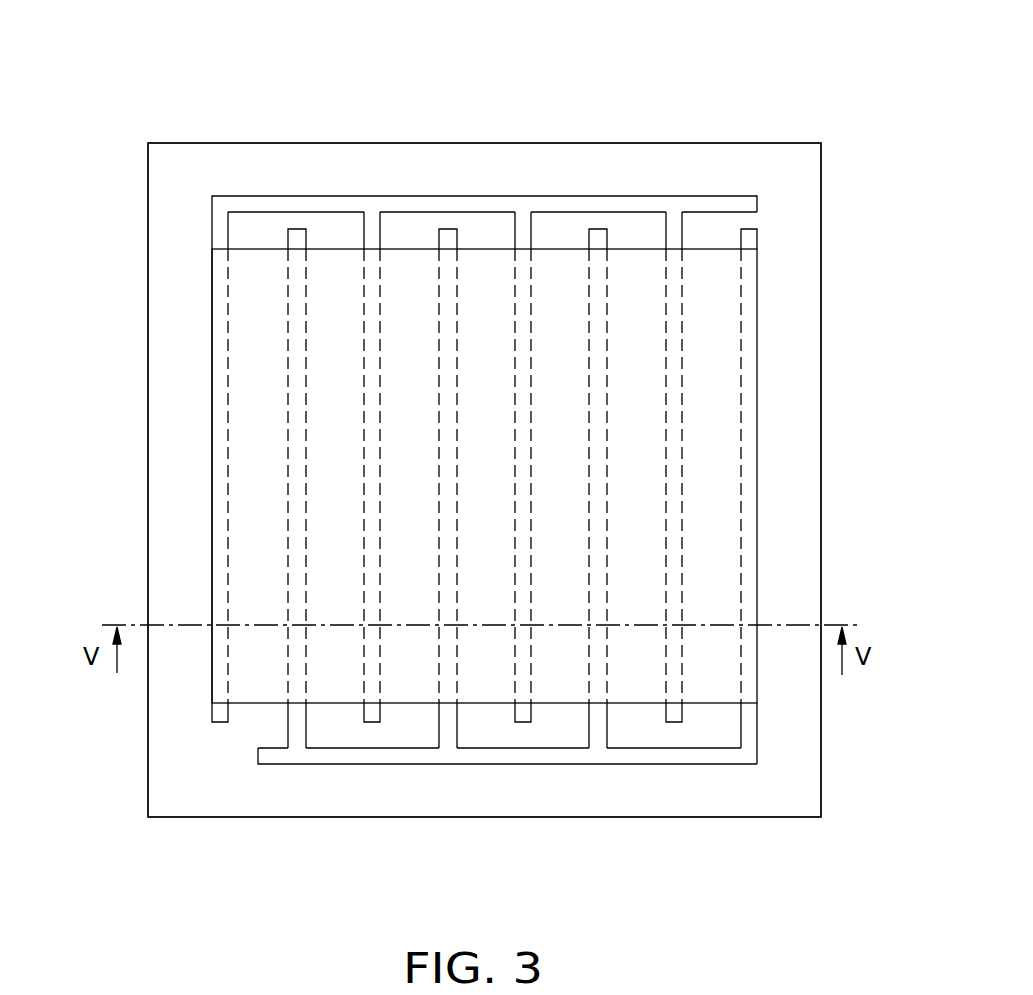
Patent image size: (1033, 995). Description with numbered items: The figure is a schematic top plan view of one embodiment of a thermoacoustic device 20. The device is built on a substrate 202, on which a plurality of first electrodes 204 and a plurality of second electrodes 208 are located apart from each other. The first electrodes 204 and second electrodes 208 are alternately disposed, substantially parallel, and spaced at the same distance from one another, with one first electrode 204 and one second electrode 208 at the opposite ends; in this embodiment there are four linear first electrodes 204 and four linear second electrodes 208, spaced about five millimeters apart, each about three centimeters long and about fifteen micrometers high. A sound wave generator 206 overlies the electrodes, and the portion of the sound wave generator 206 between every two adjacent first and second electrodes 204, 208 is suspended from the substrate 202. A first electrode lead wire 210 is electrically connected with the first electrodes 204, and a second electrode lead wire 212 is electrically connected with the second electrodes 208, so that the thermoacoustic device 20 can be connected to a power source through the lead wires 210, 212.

The thermoacoustic device 20 is at (579, 50).
The substrate 202 is at (189, 173).
The first electrodes 204 is at (373, 235).
The sound wave generator 206 is at (248, 328).
The second electrodes 208 is at (297, 718).
The first electrode lead wire 210 is at (403, 203).
The second electrode lead wire 212 is at (708, 752).